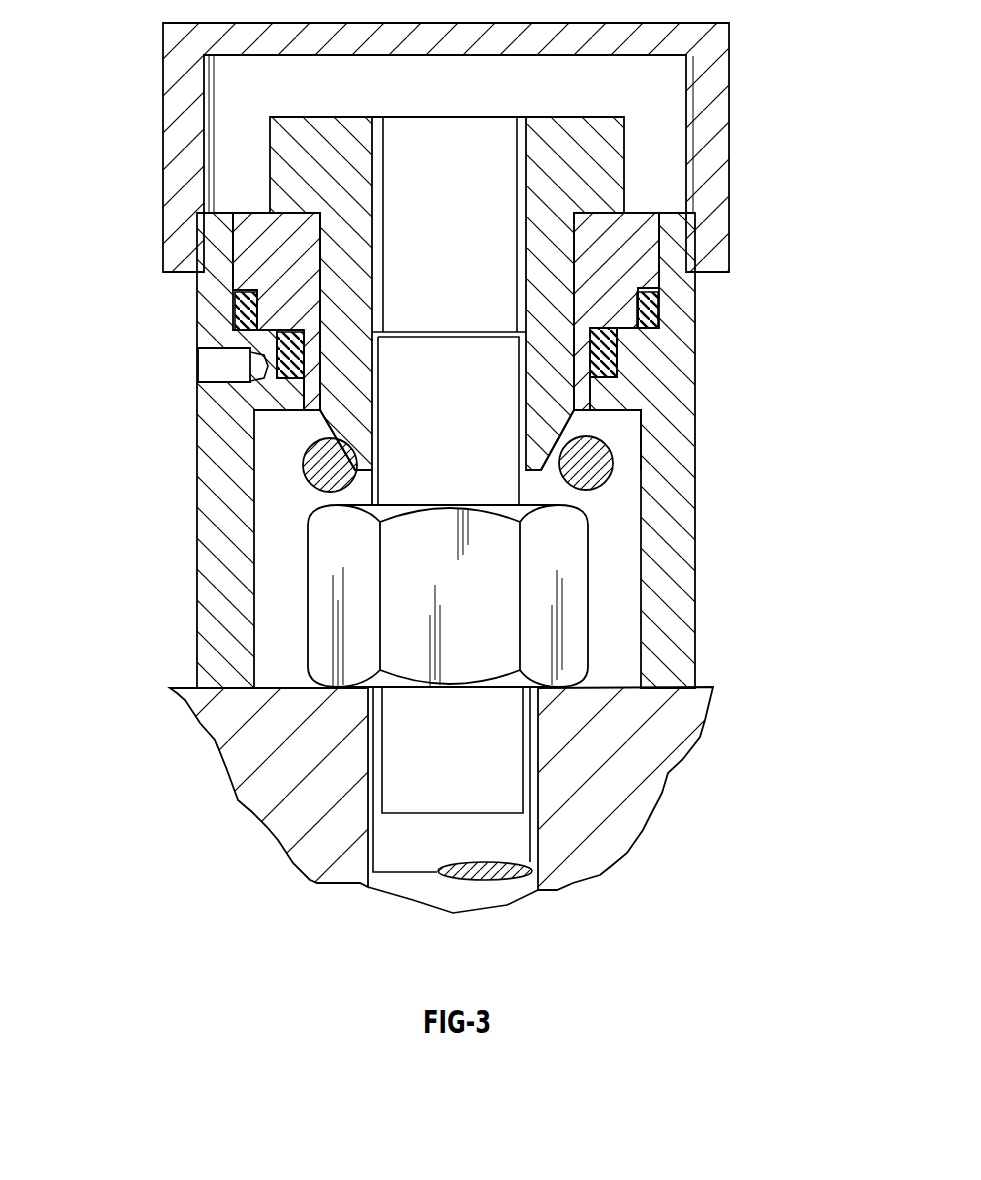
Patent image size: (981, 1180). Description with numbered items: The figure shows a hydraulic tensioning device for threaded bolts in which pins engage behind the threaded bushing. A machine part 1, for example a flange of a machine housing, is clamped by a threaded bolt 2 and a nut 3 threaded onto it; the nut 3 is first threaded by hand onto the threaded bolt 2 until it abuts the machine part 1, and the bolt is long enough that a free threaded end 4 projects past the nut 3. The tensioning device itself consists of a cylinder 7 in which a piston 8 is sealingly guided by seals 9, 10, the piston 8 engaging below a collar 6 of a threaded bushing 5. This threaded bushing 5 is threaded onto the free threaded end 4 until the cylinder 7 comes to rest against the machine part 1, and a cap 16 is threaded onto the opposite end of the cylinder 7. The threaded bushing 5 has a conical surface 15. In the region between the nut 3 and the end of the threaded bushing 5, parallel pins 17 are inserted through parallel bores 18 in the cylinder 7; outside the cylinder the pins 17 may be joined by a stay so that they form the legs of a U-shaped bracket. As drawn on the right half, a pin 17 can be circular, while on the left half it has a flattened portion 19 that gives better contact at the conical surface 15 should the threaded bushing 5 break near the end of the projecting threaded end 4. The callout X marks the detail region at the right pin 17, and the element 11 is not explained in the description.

The machine part 1 is at (633, 752).
The threaded bolt 2 is at (502, 847).
The nut 3 is at (570, 613).
The free threaded end 4 is at (493, 390).
The threaded bushing 5 is at (560, 290).
The collar 6 is at (610, 183).
The cylinder 7 is at (682, 565).
The piston 8 is at (283, 320).
The seal 9 is at (236, 296).
The seal 10 is at (250, 382).
The locking pin 11 is at (210, 362).
The conical surface 15 is at (337, 424).
The cap 16 is at (710, 78).
The parallel pins 17 is at (610, 480).
The parallel bores 18 is at (303, 473).
The flattened portion 19 is at (365, 462).
The detail region X is at (610, 448).